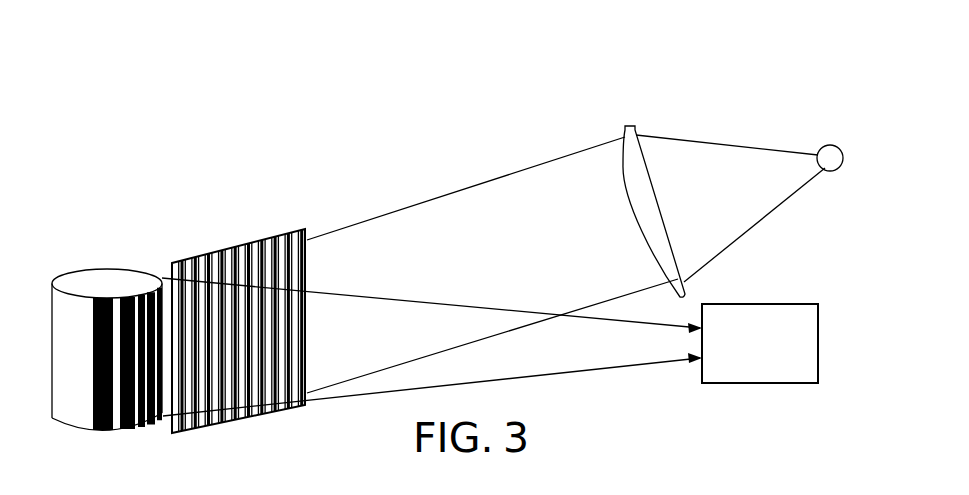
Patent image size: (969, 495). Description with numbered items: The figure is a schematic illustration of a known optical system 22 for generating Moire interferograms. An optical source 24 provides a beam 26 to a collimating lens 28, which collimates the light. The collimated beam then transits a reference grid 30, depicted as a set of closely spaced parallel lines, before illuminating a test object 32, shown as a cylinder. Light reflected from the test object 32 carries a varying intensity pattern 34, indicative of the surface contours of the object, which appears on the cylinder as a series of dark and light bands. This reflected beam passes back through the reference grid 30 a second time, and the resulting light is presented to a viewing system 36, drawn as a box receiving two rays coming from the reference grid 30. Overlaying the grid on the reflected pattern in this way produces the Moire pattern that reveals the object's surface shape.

The optical system 22 is at (697, 78).
The optical source 24 is at (832, 170).
The beam 26 is at (723, 136).
The collimating lens 28 is at (622, 129).
The reference grid 30 is at (231, 421).
The test object 32 is at (68, 303).
The varying intensity pattern 34 is at (131, 292).
The viewing system 36 is at (775, 375).